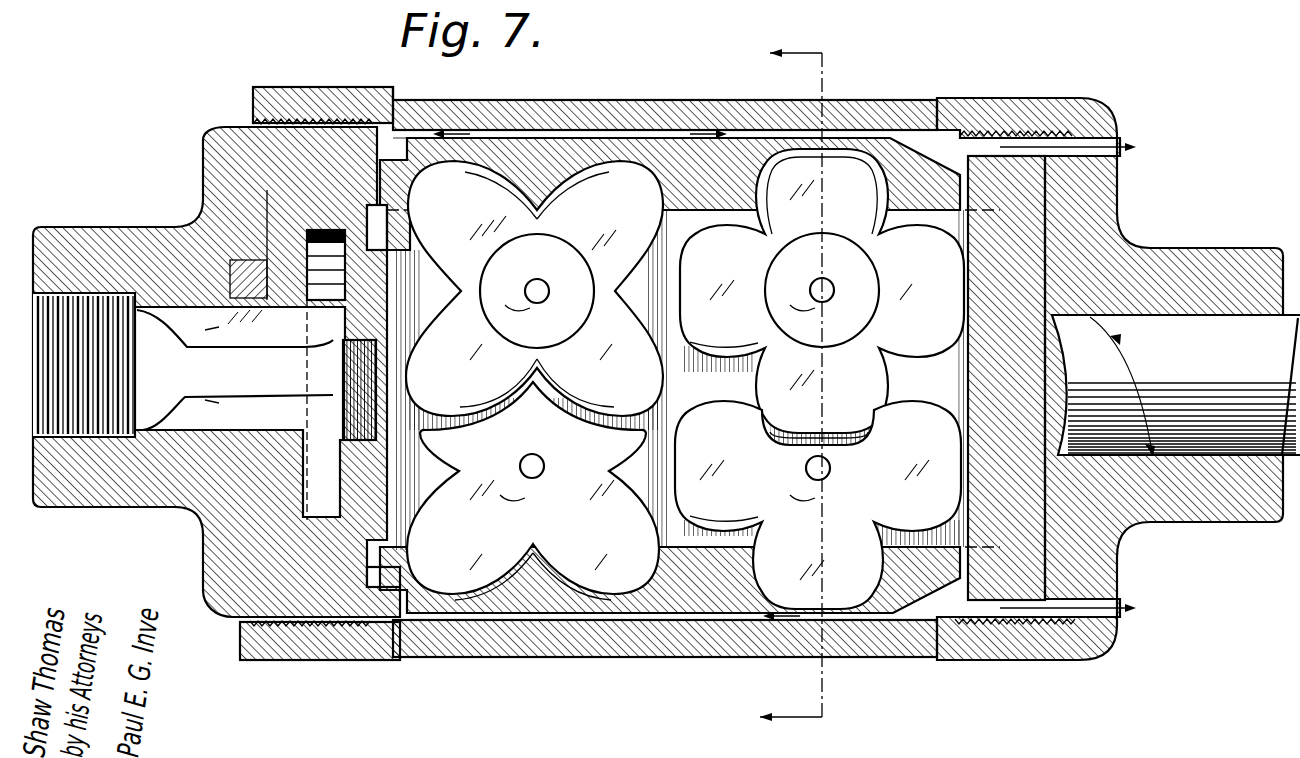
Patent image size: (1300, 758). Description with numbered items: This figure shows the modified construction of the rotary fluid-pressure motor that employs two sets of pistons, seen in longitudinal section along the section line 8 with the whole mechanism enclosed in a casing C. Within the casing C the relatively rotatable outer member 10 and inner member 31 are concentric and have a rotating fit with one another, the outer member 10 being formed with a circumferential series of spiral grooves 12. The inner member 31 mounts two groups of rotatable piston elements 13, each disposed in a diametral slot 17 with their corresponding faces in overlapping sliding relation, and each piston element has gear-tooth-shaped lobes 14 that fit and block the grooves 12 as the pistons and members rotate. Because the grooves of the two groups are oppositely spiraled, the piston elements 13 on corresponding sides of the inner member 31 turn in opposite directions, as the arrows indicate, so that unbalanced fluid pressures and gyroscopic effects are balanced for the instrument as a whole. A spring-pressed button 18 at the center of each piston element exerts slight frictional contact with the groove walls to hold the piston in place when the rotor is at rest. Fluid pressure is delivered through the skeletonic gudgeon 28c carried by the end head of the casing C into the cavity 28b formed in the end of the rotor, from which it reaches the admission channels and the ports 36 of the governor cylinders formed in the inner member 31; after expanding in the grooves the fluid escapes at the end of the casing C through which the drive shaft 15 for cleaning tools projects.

The section line 8- 8 is at (803, 391).
The casing C is at (674, 113).
The outer member 10 is at (518, 618).
The spiral grooves 12 is at (600, 165).
The piston elements 13 is at (546, 334).
The lobes 14 is at (447, 307).
The drive shaft 15 is at (1185, 383).
The diametral slot 17 is at (968, 368).
The spring-pressed button 18 is at (537, 280).
The cavity 28b is at (267, 227).
The skeletonic gudgeon 28c is at (230, 313).
The inner member 31 is at (1007, 240).
The ports 36 is at (705, 391).